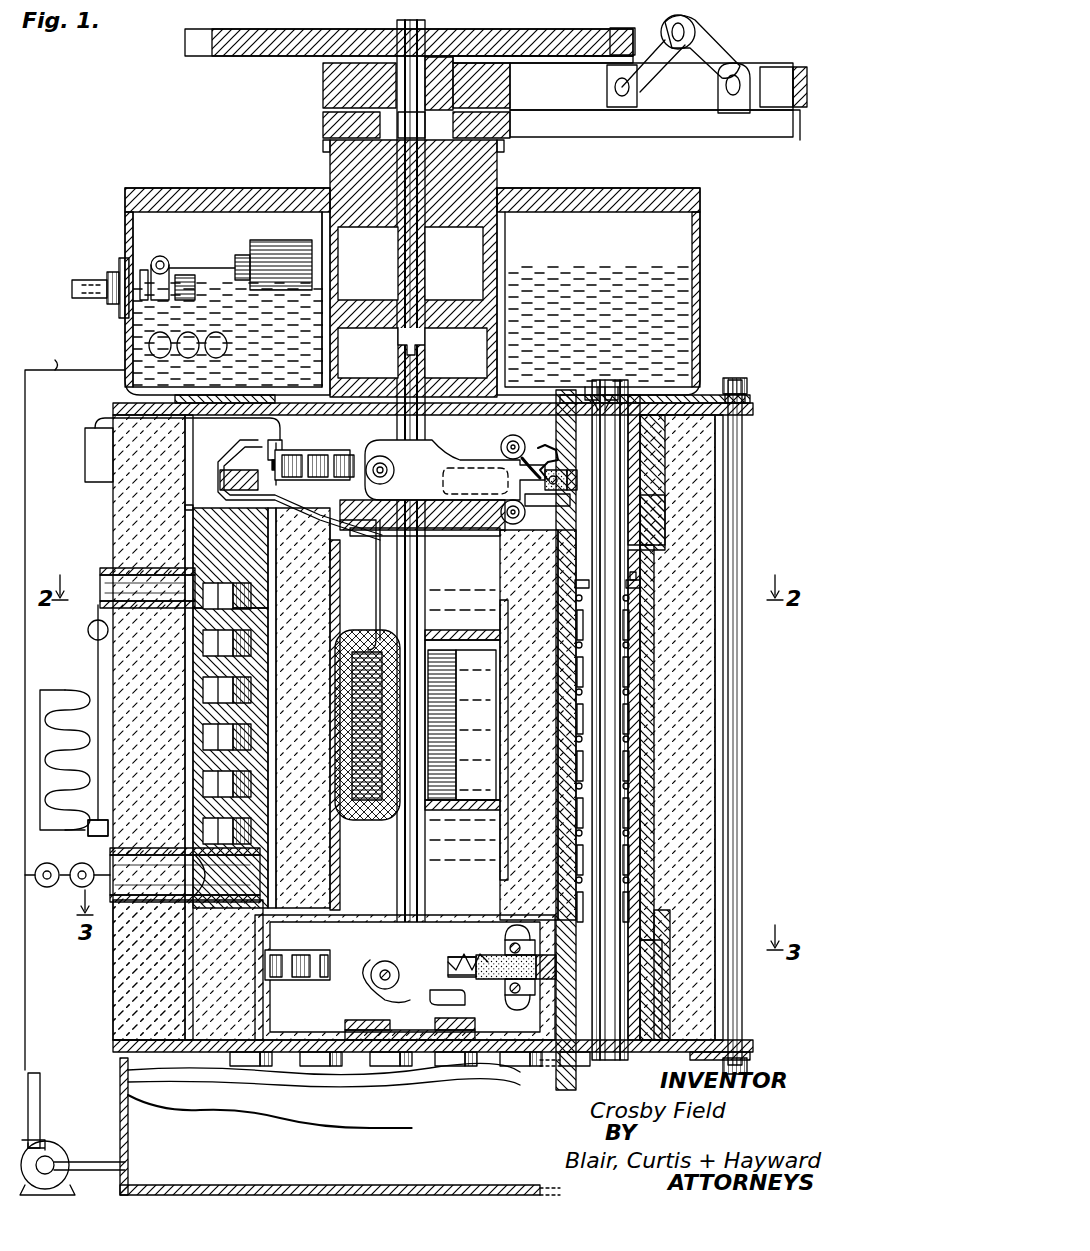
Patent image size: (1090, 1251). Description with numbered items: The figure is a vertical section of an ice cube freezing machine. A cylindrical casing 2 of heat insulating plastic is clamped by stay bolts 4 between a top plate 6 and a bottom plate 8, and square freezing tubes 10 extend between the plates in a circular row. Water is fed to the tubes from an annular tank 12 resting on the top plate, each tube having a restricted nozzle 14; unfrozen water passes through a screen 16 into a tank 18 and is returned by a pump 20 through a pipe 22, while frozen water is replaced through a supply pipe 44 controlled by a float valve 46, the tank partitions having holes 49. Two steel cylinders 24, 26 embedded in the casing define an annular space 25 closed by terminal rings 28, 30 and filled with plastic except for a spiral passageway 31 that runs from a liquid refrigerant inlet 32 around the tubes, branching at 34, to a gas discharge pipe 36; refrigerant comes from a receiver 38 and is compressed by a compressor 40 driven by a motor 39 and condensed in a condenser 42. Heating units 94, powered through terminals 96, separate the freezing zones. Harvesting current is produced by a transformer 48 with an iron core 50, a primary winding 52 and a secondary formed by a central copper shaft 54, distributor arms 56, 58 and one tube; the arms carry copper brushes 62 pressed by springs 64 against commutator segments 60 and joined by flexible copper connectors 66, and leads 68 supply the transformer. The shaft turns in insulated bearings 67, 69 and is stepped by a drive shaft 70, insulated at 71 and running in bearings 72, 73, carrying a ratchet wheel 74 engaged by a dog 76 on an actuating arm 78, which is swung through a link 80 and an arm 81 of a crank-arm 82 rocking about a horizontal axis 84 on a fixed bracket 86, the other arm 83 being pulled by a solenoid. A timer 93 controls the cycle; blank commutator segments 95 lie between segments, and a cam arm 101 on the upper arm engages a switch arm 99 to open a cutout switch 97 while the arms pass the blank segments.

The cylindrical casing 2 is at (703, 700).
The stay bolts 4 is at (735, 520).
The top plate 6 is at (128, 402).
The bottom plate 8 is at (182, 1044).
The freezing tubes 10 is at (270, 688).
The annular tank 12 is at (700, 232).
The restricted nozzle 14 is at (605, 385).
The screen 16 is at (270, 1120).
The tank 18 is at (125, 1076).
The pump 20 is at (57, 1155).
The pipe 22 is at (55, 370).
The steel cylinder 24 is at (630, 770).
The annular space 25 is at (556, 566).
The steel cylinder 26 is at (556, 880).
The terminal ring 28 is at (640, 442).
The terminal ring 30 is at (655, 1002).
The spiral passageway 31 is at (216, 590).
The liquid refrigerant inlet 32 is at (137, 590).
The passageway branches around tubes 34 is at (212, 730).
The gas discharge pipe 36 is at (137, 897).
The receiver 38 is at (98, 836).
The motor 39 is at (47, 888).
The compressor 40 is at (78, 863).
The condenser 42 is at (65, 690).
The supply pipe 44 is at (88, 280).
The float valve 46 is at (160, 292).
The transformer 48 is at (449, 642).
The holes 49 is at (178, 337).
The iron core 50 is at (445, 716).
The primary winding 52 is at (385, 822).
The central copper shaft 54 is at (422, 556).
The distributor arm 56 is at (400, 452).
The distributor arm 58 is at (438, 990).
The commutator segments 60 is at (645, 486).
The copper brush 62 is at (533, 508).
The spring 64 is at (459, 955).
The flexible copper connector 66 is at (537, 462).
The insulated bearing 67 is at (451, 392).
The leads 68 is at (245, 440).
The insulated bearing 69 is at (375, 1020).
The drive shaft 70 is at (399, 258).
The insulation 71 is at (398, 344).
The bearing 72 is at (380, 82).
The bearing 73 is at (450, 300).
The ratchet wheel 74 is at (222, 46).
The dog 76 is at (598, 65).
The actuating arm 78 is at (527, 97).
The link 80 is at (650, 48).
The arm 81 is at (722, 48).
The crank-arm 82 is at (735, 25).
The arm 83 is at (800, 140).
The horizontal axis 84 is at (726, 88).
The fixed bracket 86 is at (340, 125).
The timer 93 is at (85, 448).
The heating units 94 is at (634, 662).
The blank commutator segments 95 is at (222, 480).
The terminals 96 is at (640, 594).
The cutout switch 97 is at (268, 443).
The switch arm 99 is at (282, 458).
The cam arm 101 is at (552, 450).